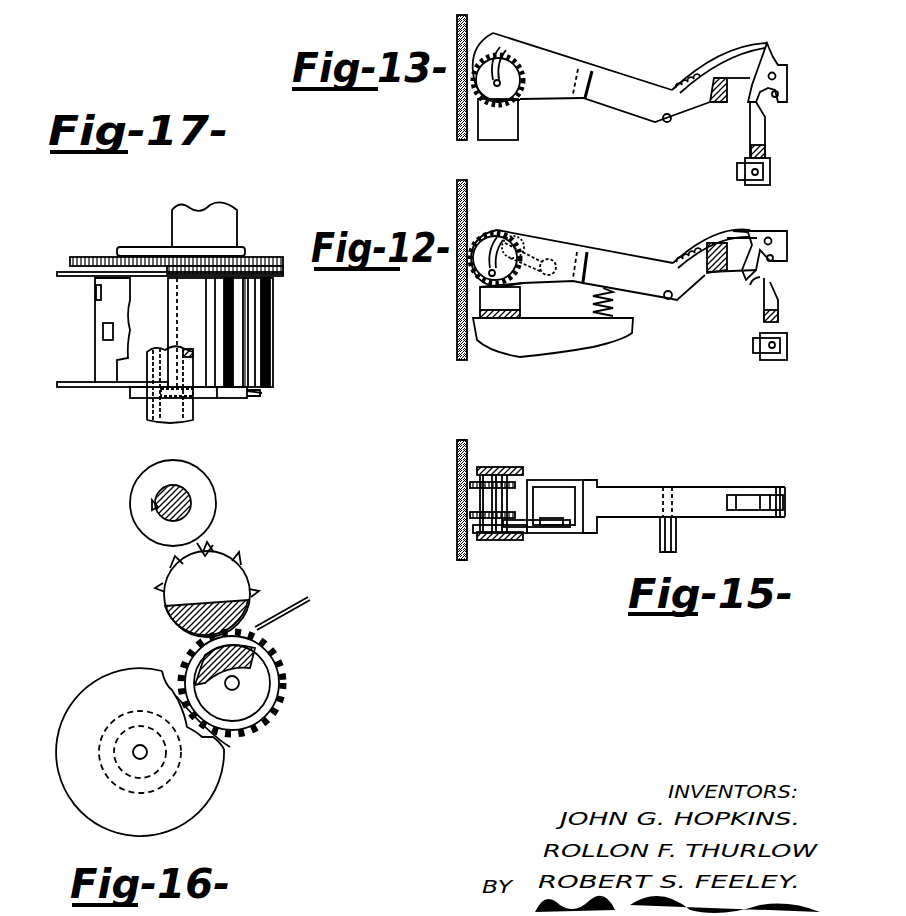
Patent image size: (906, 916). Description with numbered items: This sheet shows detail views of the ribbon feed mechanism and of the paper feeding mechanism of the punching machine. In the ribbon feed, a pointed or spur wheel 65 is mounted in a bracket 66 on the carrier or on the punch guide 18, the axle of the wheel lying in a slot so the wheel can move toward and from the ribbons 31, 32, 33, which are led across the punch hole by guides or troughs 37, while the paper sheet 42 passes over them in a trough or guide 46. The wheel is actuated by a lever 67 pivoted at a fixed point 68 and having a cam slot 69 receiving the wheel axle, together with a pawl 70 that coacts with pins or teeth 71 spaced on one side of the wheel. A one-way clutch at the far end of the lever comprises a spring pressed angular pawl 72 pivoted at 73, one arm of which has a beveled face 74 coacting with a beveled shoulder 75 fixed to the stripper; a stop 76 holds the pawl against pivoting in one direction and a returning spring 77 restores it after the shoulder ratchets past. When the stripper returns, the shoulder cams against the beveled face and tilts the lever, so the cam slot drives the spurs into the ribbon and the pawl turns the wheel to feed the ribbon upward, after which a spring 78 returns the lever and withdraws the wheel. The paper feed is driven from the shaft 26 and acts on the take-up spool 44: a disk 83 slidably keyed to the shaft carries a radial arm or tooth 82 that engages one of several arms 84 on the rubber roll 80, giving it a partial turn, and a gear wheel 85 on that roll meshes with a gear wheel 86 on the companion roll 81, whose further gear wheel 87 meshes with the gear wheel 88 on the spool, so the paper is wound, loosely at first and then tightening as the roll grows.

In FIG. 13, the guide 18 is at (443, 5).
In FIG. 12, the guide 18 is at (493, 350).
In FIG. 17, the shaft 26 is at (195, 415).
In FIG. 16, the shaft 26 is at (187, 493).
In FIG. 15, the ribbon 31 is at (460, 547).
In FIG. 13, the ribbon 32 is at (462, 141).
In FIG. 15, the ribbon 32 is at (458, 508).
In FIG. 15, the ribbon 33 is at (457, 468).
In FIG. 15, the guides or troughs 37 is at (458, 483).
In FIG. 13, the paper sheet or card 42 is at (457, 124).
In FIG. 12, the paper sheet or card 42 is at (457, 207).
In FIG. 15, the paper sheet or card 42 is at (458, 458).
In FIG. 17, the paper sheet or card 42 is at (105, 312).
In FIG. 16, the paper sheet or card 42 is at (300, 613).
In FIG. 17, the spool 44 is at (58, 388).
In FIG. 16, the spool 44 is at (92, 690).
In FIG. 15, the trough or guide 46 is at (458, 440).
In FIG. 13, the spur wheel 65 is at (478, 45).
In FIG. 12, the spur wheel 65 is at (473, 232).
In FIG. 15, the spur wheel 65 is at (472, 482).
In FIG. 13, the bracket 66 is at (510, 127).
In FIG. 12, the bracket 66 is at (497, 307).
In FIG. 15, the bracket 66 is at (513, 467).
In FIG. 13, the lever 67 is at (608, 82).
In FIG. 12, the lever 67 is at (630, 270).
In FIG. 15, the lever 67 is at (638, 487).
In FIG. 13, the pivot 68 is at (663, 123).
In FIG. 12, the pivot 68 is at (680, 298).
In FIG. 15, the pivot 68 is at (680, 533).
In FIG. 13, the cam slot 69 is at (505, 55).
In FIG. 12, the cam slot 69 is at (503, 233).
In FIG. 12, the pawl 70 is at (522, 245).
In FIG. 15, the pawl 70 is at (523, 518).
In FIG. 12, the pins or teeth 71 is at (525, 287).
In FIG. 15, the pins or teeth 71 is at (512, 505).
In FIG. 13, the angular pawl 72 is at (767, 63).
In FIG. 12, the angular pawl 72 is at (763, 232).
In FIG. 15, the angular pawl 72 is at (785, 500).
In FIG. 13, the pivot 73 is at (777, 76).
In FIG. 12, the pivot 73 is at (773, 240).
In FIG. 13, the beveled face 74 is at (747, 103).
In FIG. 12, the beveled face 74 is at (760, 277).
In FIG. 13, the beveled shoulder 75 is at (766, 136).
In FIG. 12, the beveled shoulder 75 is at (778, 307).
In FIG. 13, the stop 76 is at (779, 96).
In FIG. 12, the stop 76 is at (778, 258).
In FIG. 13, the returning spring 77 is at (716, 74).
In FIG. 12, the returning spring 77 is at (723, 230).
In FIG. 12, the spring 78 is at (600, 318).
In FIG. 17, the roll 80 is at (223, 337).
In FIG. 16, the roll 80 is at (193, 608).
In FIG. 17, the roll 81 is at (260, 365).
In FIG. 16, the roll 81 is at (263, 650).
In FIG. 16, the radial arm or tooth 82 is at (207, 543).
In FIG. 17, the disk 83 is at (132, 398).
In FIG. 16, the disk 83 is at (135, 493).
In FIG. 17, the arms 84 is at (262, 393).
In FIG. 16, the arms 84 is at (253, 590).
In FIG. 17, the gear wheel 85 is at (187, 272).
In FIG. 16, the gear wheel 85 is at (173, 632).
In FIG. 17, the gear wheel 86 is at (282, 275).
In FIG. 16, the gear wheel 86 is at (283, 672).
In FIG. 17, the gear wheel 87 is at (278, 262).
In FIG. 16, the gear wheel 87 is at (277, 707).
In FIG. 17, the gear wheel 88 is at (85, 262).
In FIG. 16, the gear wheel 88 is at (230, 747).